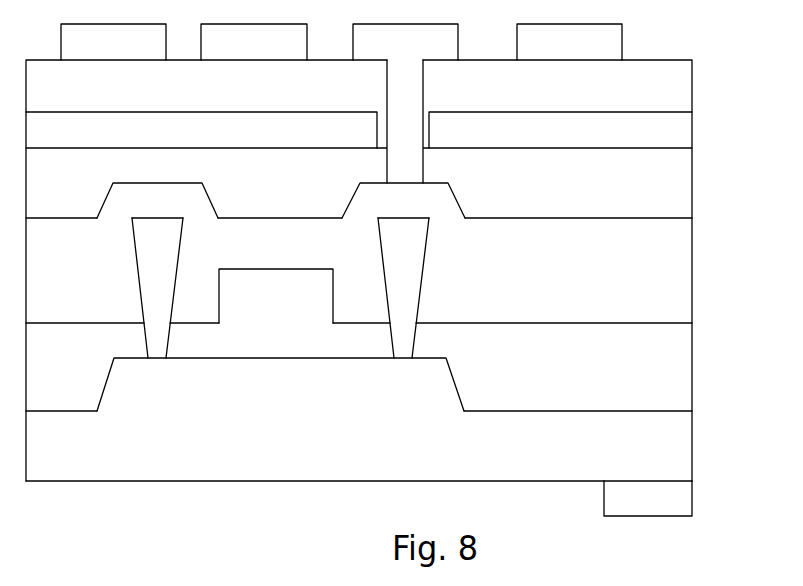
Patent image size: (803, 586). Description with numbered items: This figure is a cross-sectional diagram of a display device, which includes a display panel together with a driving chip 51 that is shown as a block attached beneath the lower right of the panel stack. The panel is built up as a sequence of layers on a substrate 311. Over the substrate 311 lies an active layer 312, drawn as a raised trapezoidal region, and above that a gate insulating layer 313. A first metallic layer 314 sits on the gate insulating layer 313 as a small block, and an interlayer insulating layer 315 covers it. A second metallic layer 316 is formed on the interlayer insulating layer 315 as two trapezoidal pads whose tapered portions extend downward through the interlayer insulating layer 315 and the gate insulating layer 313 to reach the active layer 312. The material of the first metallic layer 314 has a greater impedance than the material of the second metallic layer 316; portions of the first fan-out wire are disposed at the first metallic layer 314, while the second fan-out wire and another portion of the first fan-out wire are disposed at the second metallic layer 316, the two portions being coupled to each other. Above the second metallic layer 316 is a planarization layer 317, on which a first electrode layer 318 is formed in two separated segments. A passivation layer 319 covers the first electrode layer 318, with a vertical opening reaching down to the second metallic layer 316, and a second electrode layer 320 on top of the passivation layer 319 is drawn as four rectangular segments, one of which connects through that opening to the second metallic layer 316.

The substrate 311 is at (664, 447).
The active layer 312 is at (447, 393).
The gate insulating layer 313 is at (664, 357).
The first metallic layer 314 is at (317, 306).
The interlayer insulating layer 315 is at (657, 252).
The second metallic layer 316 is at (445, 200).
The planarization layer 317 is at (664, 165).
The first electrode layer 318 is at (672, 130).
The passivation layer 319 is at (667, 95).
The second electrode layer 320 is at (605, 43).
The driving chip 51 is at (672, 498).